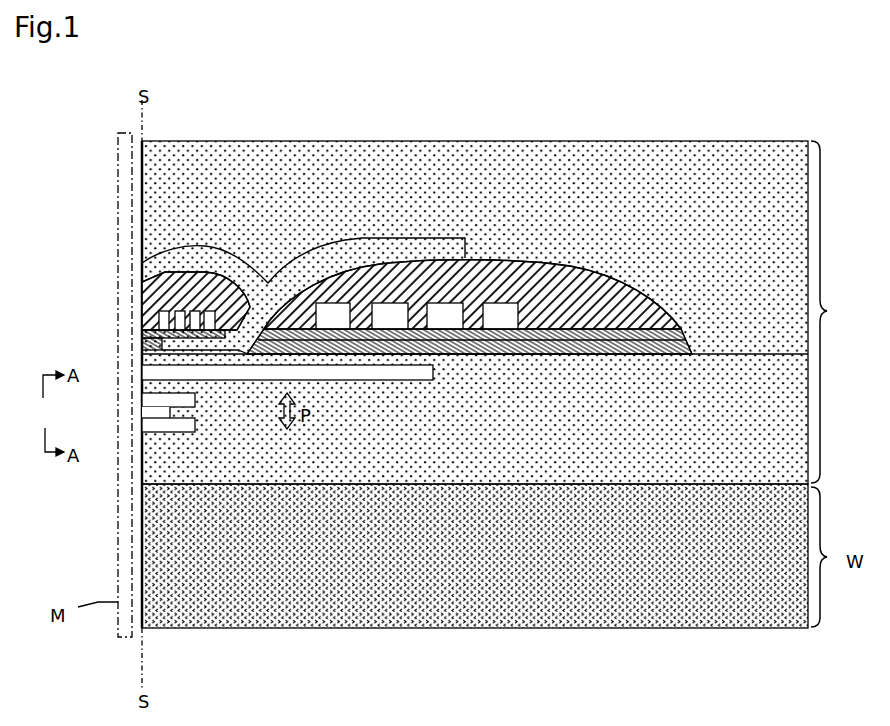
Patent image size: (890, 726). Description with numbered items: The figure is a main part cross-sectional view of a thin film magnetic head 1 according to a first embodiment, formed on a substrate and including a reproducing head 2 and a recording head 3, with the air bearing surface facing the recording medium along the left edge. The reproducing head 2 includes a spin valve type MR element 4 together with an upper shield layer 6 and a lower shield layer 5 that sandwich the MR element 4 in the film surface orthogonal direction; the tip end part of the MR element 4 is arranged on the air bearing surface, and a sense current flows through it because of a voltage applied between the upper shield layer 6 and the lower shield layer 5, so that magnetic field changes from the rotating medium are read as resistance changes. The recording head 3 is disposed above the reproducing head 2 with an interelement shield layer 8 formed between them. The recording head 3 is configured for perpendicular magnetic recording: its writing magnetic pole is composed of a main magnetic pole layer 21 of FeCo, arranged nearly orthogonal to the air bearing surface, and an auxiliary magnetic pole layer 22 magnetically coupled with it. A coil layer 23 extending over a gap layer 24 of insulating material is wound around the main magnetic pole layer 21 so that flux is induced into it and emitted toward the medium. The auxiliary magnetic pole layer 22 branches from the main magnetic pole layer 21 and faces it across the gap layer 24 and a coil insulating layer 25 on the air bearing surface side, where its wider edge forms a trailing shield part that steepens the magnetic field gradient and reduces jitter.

The thin film magnetic head 1 is at (498, 384).
The reproducing head 2 is at (172, 415).
The recording head 3 is at (274, 249).
The MR element 4 is at (142, 412).
The lower shield layer 5 is at (142, 425).
The upper shield layer 6 is at (142, 400).
The interelement shield layer 8 is at (142, 372).
The main magnetic pole layer 21 is at (142, 340).
The auxiliary magnetic pole layer 22 is at (142, 263).
The coil layer 23 is at (210, 306).
The gap layer 24 is at (142, 318).
The coil insulating layer 25 is at (142, 290).